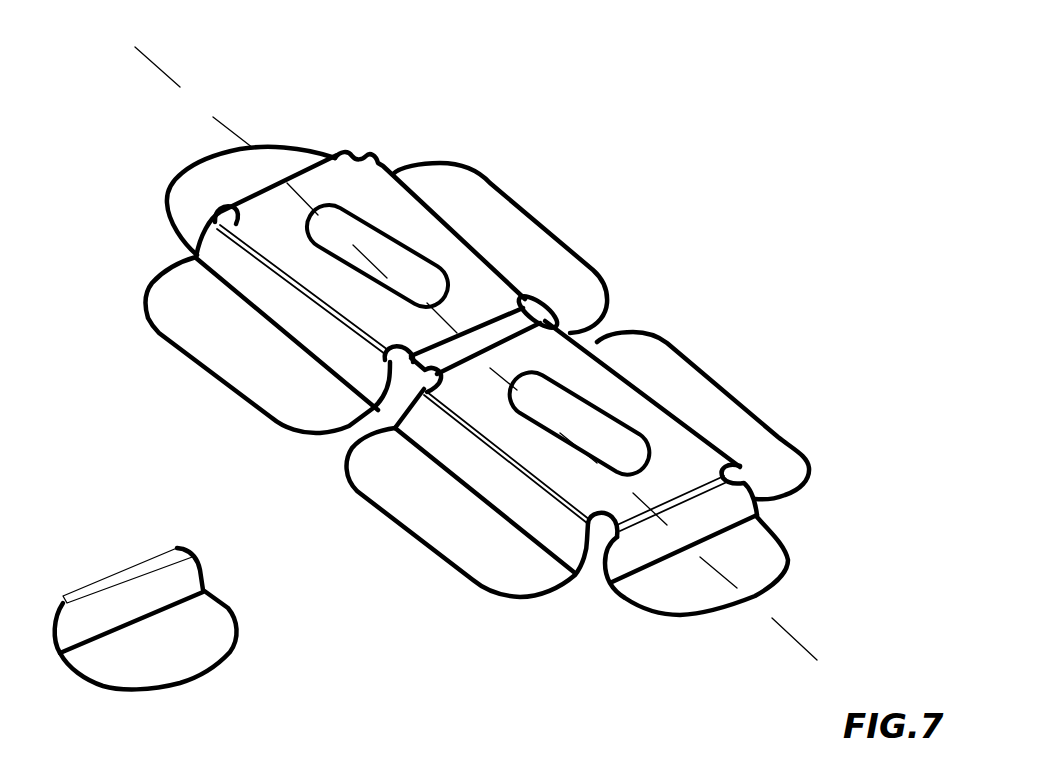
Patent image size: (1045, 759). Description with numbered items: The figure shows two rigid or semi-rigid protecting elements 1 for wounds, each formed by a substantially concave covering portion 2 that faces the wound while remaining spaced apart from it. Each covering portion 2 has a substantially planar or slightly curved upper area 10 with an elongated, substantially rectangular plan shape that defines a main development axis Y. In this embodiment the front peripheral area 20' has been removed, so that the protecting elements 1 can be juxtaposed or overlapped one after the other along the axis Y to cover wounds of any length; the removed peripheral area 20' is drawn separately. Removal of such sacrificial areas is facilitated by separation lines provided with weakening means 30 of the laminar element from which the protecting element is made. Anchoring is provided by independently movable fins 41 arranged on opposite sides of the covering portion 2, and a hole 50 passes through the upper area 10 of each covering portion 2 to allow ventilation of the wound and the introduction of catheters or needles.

The protecting element 1 is at (723, 103).
The covering portion 2 is at (97, 220).
The upper area 10 is at (379, 172).
The peripheral area 20' is at (137, 593).
The weakening means 30 is at (337, 335).
The fins 41 is at (290, 157).
The hole 50 is at (383, 247).
The main development axis Y is at (157, 68).